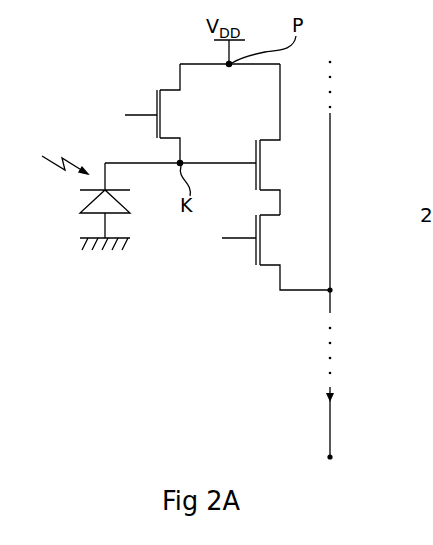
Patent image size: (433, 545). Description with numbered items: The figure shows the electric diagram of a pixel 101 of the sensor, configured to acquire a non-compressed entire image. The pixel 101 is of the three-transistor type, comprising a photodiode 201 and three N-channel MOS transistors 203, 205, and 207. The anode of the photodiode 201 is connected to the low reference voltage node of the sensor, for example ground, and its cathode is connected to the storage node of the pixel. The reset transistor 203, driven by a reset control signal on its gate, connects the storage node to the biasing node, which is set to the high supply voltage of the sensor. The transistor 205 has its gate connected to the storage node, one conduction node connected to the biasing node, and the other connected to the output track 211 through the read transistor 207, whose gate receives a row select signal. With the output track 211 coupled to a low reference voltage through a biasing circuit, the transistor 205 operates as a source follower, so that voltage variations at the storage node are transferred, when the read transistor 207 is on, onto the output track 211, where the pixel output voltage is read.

The pixel 101 is at (147, 47).
The photodiode 201 is at (87, 203).
The reset transistor 203 is at (163, 106).
The transistor 205 is at (263, 169).
The read transistor 207 is at (263, 232).
The output track 211 is at (331, 198).